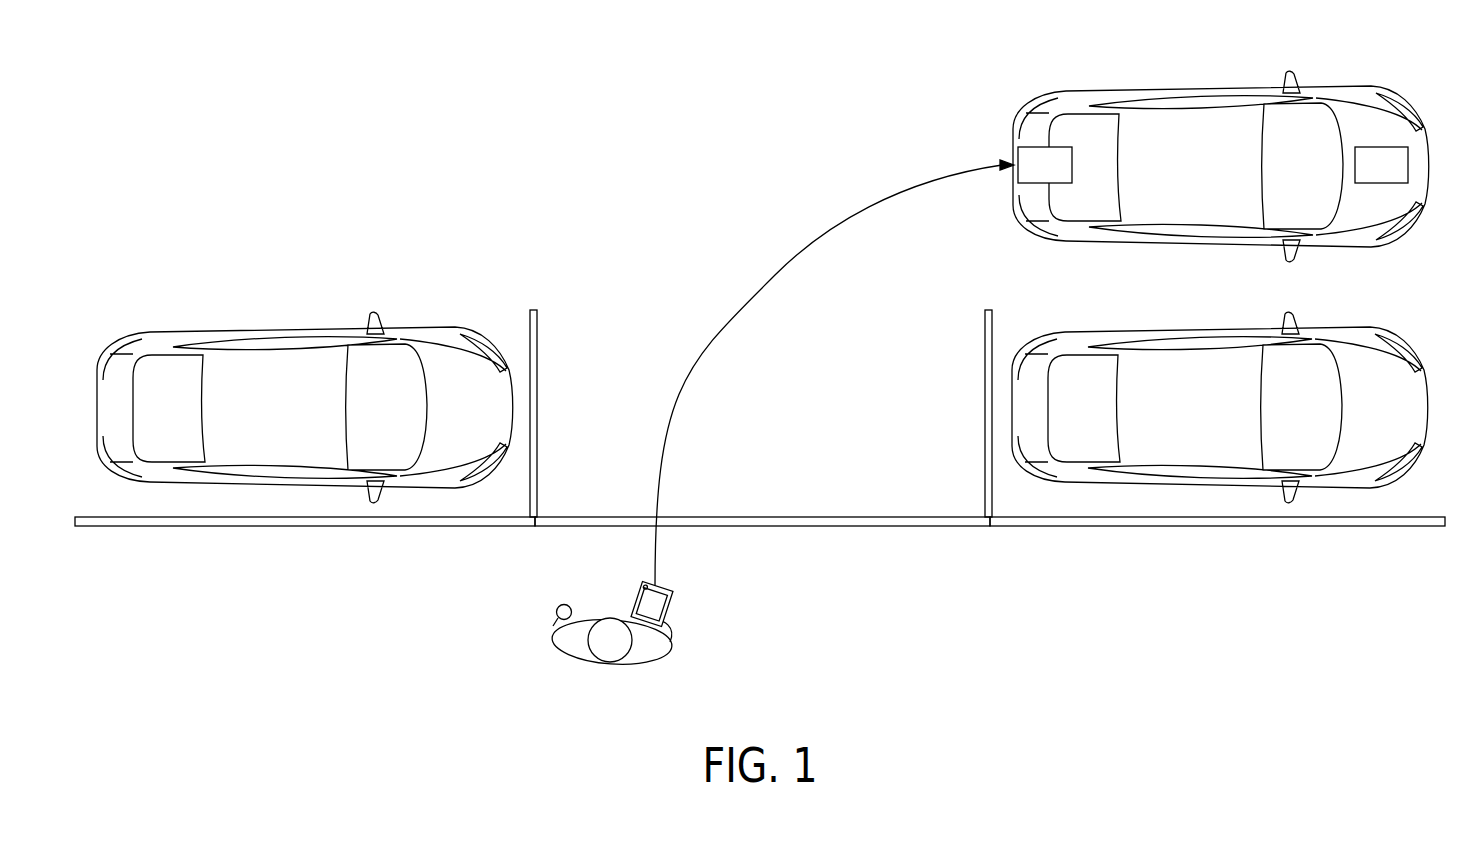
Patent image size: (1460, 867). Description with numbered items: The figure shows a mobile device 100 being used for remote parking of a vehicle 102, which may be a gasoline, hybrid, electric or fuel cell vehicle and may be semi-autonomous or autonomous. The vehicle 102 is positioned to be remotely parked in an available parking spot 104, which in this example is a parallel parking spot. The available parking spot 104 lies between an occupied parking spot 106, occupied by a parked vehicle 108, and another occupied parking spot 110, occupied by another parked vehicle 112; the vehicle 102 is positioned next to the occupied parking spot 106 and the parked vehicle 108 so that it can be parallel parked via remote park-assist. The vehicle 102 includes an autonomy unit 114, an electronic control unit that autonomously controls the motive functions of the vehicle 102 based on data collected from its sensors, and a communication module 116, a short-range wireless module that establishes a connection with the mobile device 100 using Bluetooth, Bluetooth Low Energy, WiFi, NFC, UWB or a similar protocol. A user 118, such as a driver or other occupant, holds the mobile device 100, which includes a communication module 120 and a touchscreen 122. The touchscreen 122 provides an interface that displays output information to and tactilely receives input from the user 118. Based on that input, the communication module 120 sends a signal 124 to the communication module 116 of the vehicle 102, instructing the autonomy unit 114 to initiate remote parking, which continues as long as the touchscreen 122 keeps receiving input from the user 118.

The mobile device 100 is at (659, 585).
The vehicle 102 is at (1200, 89).
The available parking spot 104 is at (774, 424).
The occupied parking spot 106 is at (282, 486).
The parked vehicle 108 is at (251, 416).
The occupied parking spot 110 is at (1191, 485).
The parked vehicle 112 is at (1164, 416).
The autonomy unit 114 is at (1400, 177).
The communication module 116 is at (1064, 177).
The user 118 is at (573, 643).
The communication module 120 is at (639, 583).
The touchscreen 122 is at (648, 608).
The signal 124 is at (741, 308).